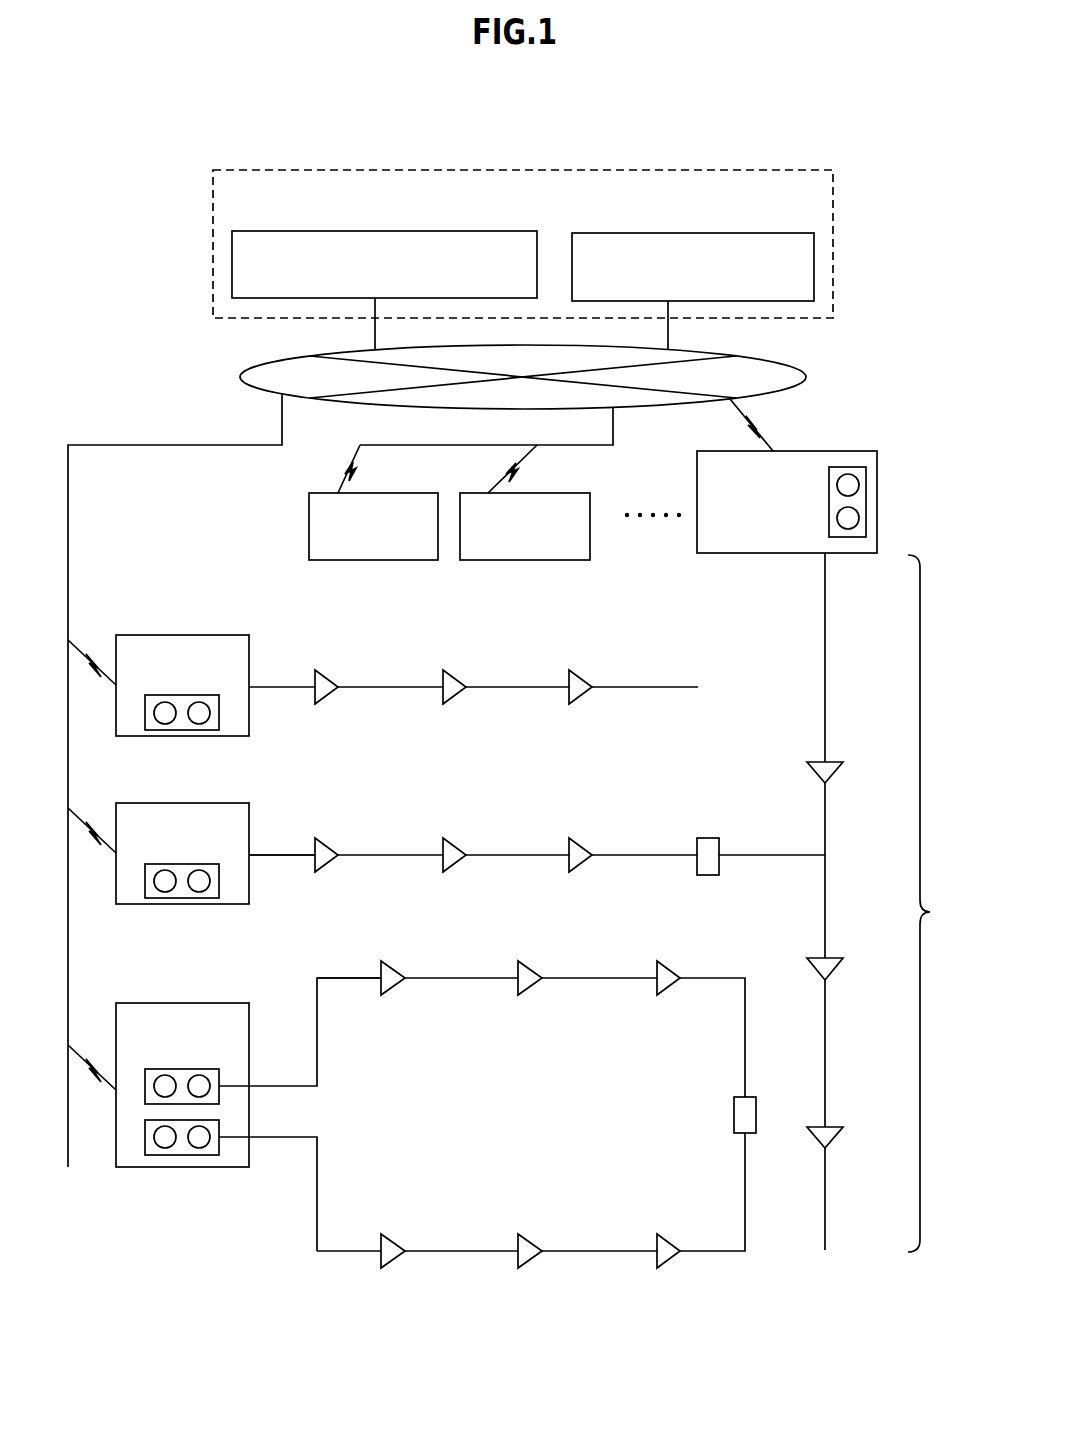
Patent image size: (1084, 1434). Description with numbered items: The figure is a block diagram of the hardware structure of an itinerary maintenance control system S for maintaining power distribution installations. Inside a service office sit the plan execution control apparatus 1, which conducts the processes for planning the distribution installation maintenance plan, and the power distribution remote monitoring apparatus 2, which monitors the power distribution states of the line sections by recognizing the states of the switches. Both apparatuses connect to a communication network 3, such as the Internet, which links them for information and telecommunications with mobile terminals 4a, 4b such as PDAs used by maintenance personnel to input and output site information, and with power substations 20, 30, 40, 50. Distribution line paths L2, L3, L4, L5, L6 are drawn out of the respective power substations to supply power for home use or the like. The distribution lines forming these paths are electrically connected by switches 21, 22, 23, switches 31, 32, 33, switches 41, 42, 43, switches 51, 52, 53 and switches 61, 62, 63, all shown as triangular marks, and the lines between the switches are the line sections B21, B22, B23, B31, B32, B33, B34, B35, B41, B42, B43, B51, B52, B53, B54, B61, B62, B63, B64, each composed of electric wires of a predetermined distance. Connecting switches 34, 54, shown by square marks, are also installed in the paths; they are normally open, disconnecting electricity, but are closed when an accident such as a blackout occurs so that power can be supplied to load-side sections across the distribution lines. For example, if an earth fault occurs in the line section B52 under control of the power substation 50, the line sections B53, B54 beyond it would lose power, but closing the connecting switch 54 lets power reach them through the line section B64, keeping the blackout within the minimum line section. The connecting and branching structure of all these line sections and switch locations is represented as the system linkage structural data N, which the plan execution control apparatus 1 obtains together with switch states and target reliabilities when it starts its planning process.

The itinerary maintenance control system S is at (553, 128).
The plan execution control apparatus 1 is at (722, 233).
The power distribution remote monitoring apparatus 2 is at (400, 231).
The communication network 3 is at (806, 377).
The mobile terminal 4a is at (385, 493).
The mobile terminal 4b is at (537, 493).
The power substation 20 is at (176, 635).
The power substation 30 is at (176, 803).
The power substation 40 is at (816, 452).
The power substation 50 is at (176, 1003).
The switch 21 is at (322, 670).
The switch 22 is at (456, 670).
The switch 23 is at (582, 670).
The switch 31 is at (322, 838).
The switch 32 is at (456, 838).
The switch 33 is at (582, 838).
The connecting switch 34 is at (708, 838).
The switch 41 is at (828, 765).
The switch 42 is at (828, 961).
The switch 43 is at (828, 1130).
The switch 51 is at (394, 961).
The switch 52 is at (531, 961).
The switch 53 is at (670, 961).
The connecting switch 54 is at (734, 1114).
The switch 61 is at (394, 1234).
The switch 62 is at (531, 1234).
The switch 63 is at (670, 1234).
The line section B21 is at (270, 686).
The line section B22 is at (392, 687).
The line section B23 is at (521, 687).
The line section B31 is at (270, 854).
The line section B32 is at (392, 855).
The line section B33 is at (521, 855).
The line section B34 is at (647, 855).
The line section B35 is at (766, 855).
The line section B41 is at (826, 605).
The line section B42 is at (826, 828).
The line section B43 is at (826, 1040).
The line section B51 is at (317, 1013).
The line section B52 is at (458, 978).
The line section B53 is at (599, 978).
The line section B54 is at (745, 1040).
The line section B61 is at (317, 1212).
The line section B62 is at (458, 1251).
The line section B63 is at (599, 1251).
The line section B64 is at (745, 1157).
The distribution line path L2 is at (637, 688).
The distribution line path L3 is at (287, 856).
The distribution line path L4 is at (822, 1203).
The distribution line path L5 is at (317, 1040).
The distribution line path L6 is at (317, 1157).
The system linkage structural data N is at (930, 903).